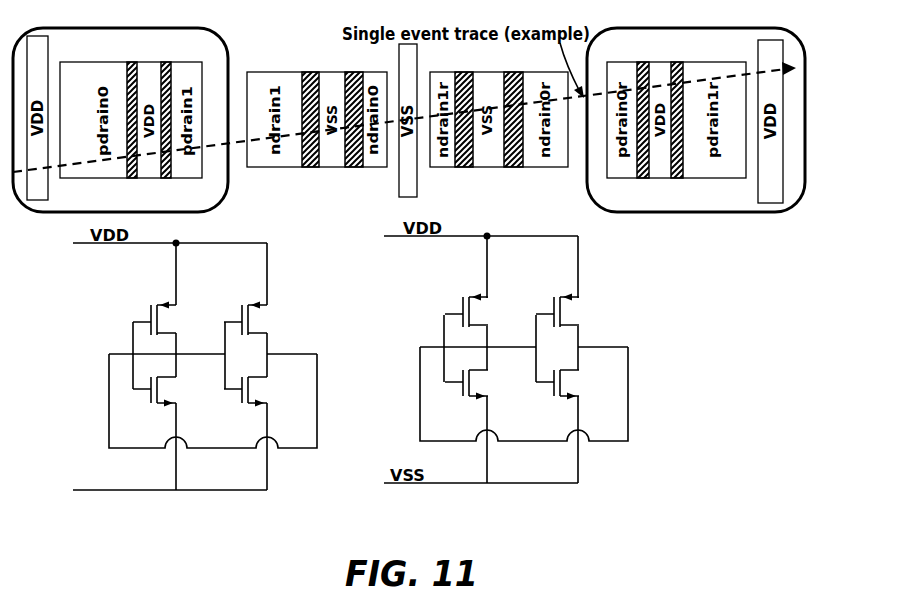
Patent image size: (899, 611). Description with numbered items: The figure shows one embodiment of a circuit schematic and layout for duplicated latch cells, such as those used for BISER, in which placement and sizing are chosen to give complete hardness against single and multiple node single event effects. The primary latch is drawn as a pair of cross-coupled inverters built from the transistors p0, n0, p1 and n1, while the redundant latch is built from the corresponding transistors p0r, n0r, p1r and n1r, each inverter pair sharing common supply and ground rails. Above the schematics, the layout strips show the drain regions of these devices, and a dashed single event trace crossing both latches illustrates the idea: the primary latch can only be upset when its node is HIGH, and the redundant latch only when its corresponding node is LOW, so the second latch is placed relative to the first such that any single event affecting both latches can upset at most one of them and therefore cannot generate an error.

The PMOS transistor p0 is at (168, 319).
The NMOS transistor n0 is at (166, 392).
The PMOS transistor p1 is at (260, 321).
The NMOS transistor n1 is at (257, 392).
The redundant PMOS transistor p0r is at (483, 311).
The redundant NMOS transistor n0r is at (481, 385).
The redundant PMOS transistor p1r is at (576, 313).
The redundant NMOS transistor n1r is at (573, 385).